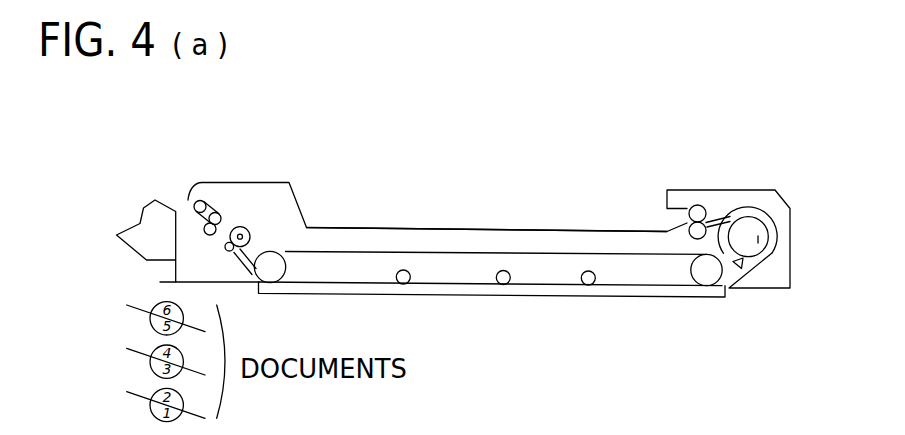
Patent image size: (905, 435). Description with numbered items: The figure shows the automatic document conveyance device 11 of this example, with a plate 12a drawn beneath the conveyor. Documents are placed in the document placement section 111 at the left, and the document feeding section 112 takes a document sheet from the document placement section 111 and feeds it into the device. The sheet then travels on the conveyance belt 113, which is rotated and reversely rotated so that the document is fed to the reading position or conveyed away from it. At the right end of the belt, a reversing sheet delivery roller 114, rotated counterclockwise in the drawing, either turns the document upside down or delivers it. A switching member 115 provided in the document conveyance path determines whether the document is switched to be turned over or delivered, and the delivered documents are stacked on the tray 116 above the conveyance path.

The automatic document feeder 11 is at (539, 204).
The document placement section 111 is at (163, 198).
The document feeding section 112 is at (212, 200).
The conveyance belt 113 is at (392, 250).
The reversing sheet delivery roller 114 is at (752, 226).
The switching member 115 is at (731, 219).
The tray 116 is at (463, 229).
The platen plate 12a is at (483, 298).